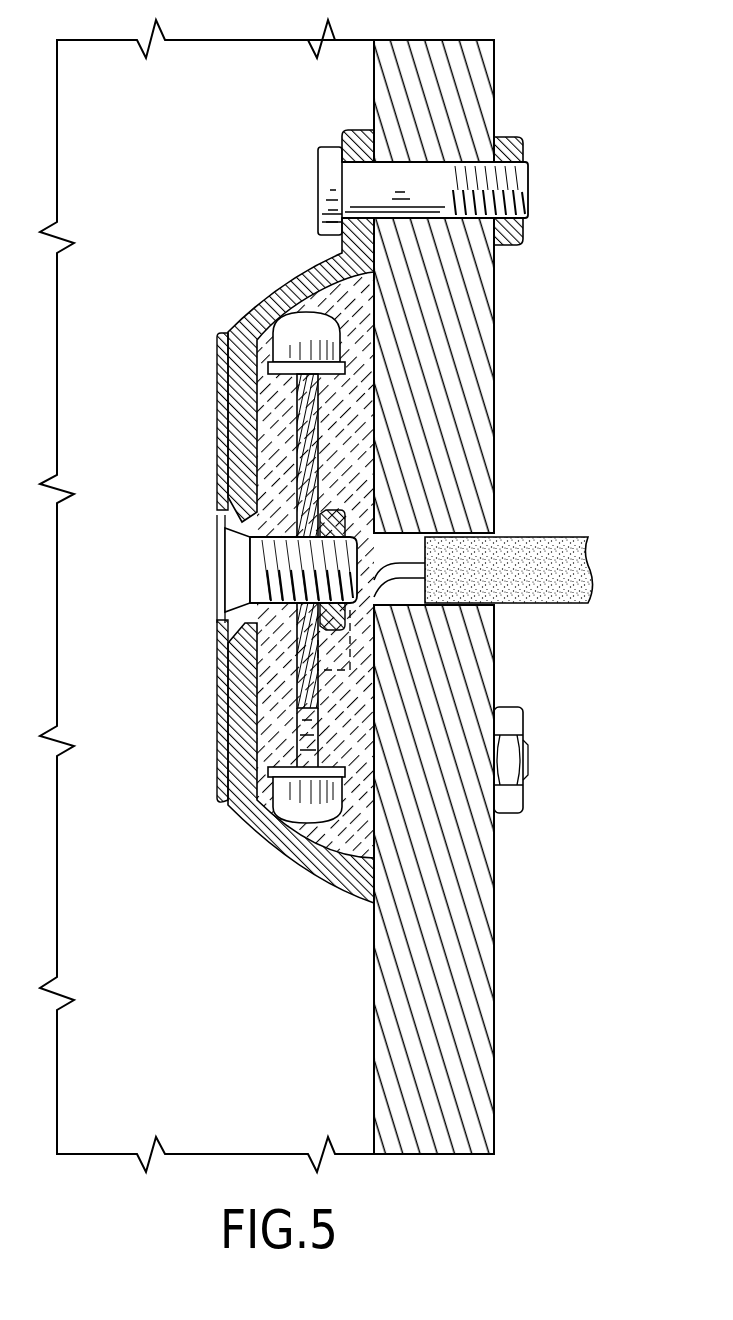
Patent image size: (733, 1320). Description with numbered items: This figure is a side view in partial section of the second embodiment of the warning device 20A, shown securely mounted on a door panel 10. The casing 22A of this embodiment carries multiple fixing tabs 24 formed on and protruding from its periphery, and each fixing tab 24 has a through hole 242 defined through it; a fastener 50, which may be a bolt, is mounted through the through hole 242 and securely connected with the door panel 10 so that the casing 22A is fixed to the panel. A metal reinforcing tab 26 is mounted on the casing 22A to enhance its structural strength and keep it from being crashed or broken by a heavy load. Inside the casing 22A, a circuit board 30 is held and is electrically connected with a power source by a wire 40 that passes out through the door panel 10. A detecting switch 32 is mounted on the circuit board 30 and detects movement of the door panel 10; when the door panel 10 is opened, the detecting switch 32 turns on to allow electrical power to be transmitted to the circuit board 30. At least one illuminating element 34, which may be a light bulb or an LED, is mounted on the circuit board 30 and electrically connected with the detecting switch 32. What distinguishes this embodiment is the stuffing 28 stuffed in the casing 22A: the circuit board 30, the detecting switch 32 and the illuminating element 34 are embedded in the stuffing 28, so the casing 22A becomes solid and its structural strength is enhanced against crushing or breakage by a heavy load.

The door panel 10 is at (474, 85).
The warning device 20A is at (312, 518).
The casing 22A is at (270, 303).
The fixing tab 24 is at (340, 127).
The through hole 242 is at (346, 175).
The metal reinforcing tab 26 is at (225, 378).
The stuffing 28 is at (268, 713).
The circuit board 30 is at (270, 803).
The detecting switch 32 is at (345, 650).
The illuminating element 34 is at (303, 813).
The wire 40 is at (541, 548).
The fastener 50 is at (327, 216).